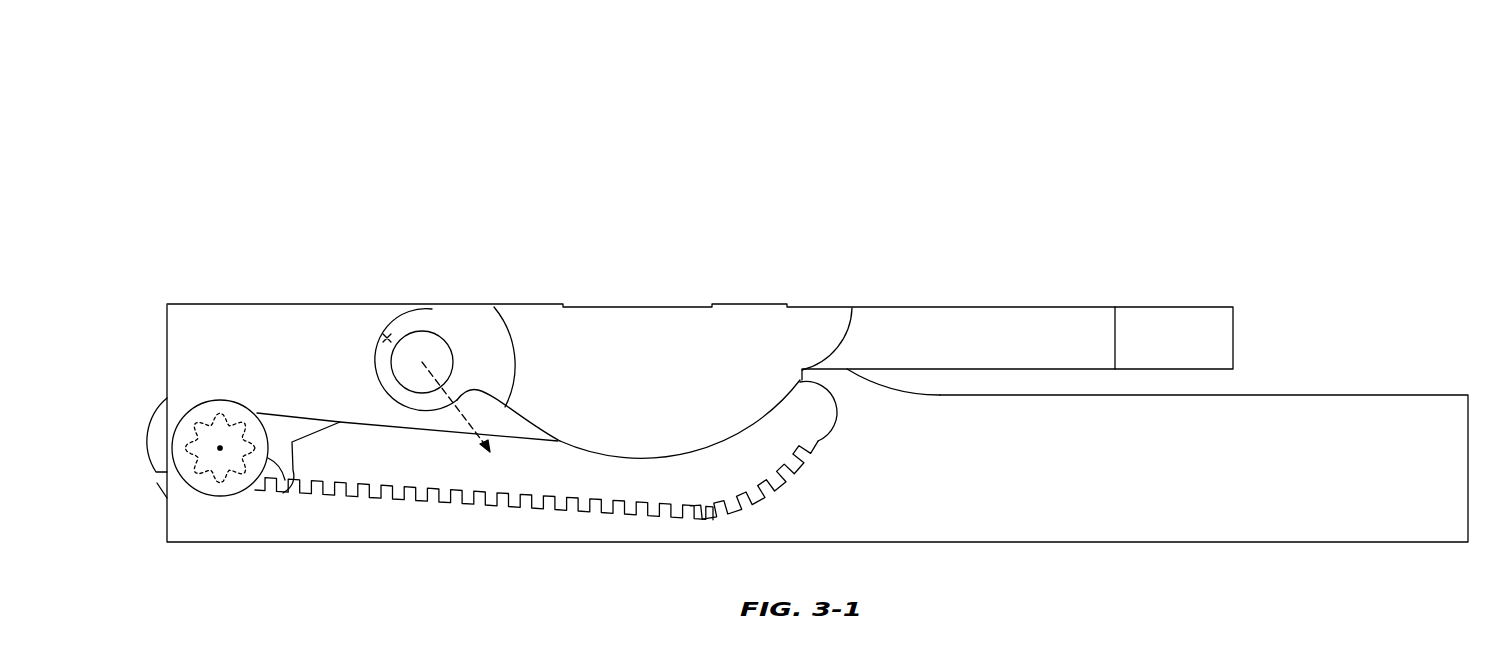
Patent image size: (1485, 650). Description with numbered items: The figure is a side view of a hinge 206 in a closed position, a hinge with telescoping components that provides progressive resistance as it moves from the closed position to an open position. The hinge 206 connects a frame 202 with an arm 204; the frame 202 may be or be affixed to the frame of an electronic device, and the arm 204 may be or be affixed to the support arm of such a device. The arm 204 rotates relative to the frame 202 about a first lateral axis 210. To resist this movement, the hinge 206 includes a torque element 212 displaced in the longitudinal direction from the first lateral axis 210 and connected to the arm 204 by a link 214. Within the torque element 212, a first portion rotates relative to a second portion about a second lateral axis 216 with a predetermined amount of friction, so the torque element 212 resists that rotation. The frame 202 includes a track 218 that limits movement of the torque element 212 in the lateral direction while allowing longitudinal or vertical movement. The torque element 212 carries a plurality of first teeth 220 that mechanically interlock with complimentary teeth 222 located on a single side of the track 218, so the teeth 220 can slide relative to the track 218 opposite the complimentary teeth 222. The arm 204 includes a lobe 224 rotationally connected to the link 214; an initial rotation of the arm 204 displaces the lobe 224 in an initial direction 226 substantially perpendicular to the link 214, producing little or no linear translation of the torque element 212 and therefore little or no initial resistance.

The frame 202 is at (1347, 516).
The arm 204 is at (1008, 338).
The hinge 206 is at (1392, 69).
The first lateral axis 210 is at (636, 266).
The torque element 212 is at (283, 495).
The link 214 is at (297, 427).
The second lateral axis 216 is at (220, 449).
The track 218 is at (447, 470).
The first teeth 220 is at (183, 423).
The complimentary teeth 222 is at (711, 504).
The lobe 224 is at (387, 338).
The initial direction 226 is at (458, 398).